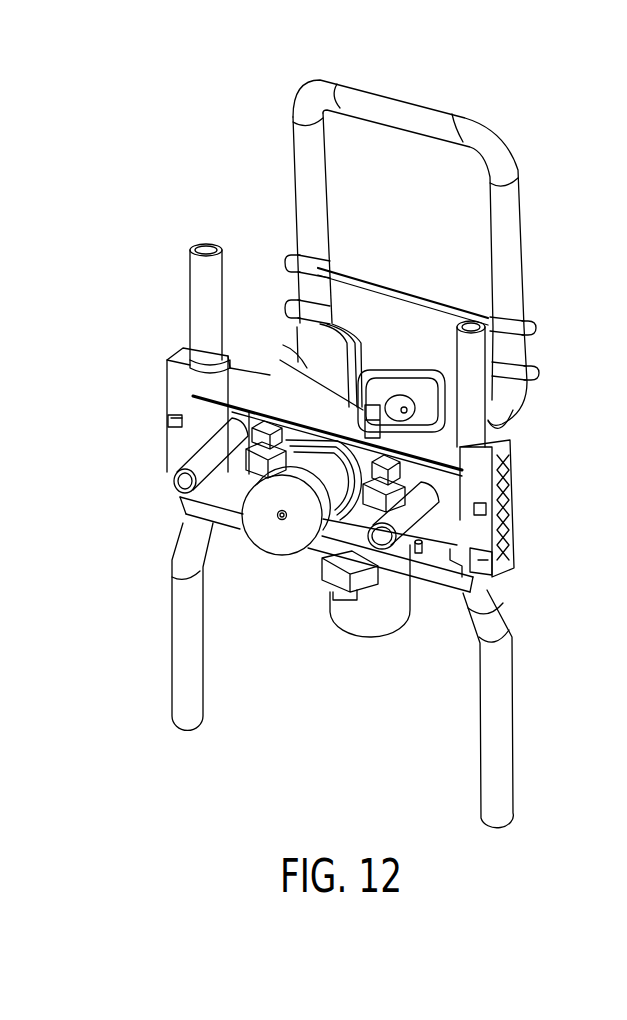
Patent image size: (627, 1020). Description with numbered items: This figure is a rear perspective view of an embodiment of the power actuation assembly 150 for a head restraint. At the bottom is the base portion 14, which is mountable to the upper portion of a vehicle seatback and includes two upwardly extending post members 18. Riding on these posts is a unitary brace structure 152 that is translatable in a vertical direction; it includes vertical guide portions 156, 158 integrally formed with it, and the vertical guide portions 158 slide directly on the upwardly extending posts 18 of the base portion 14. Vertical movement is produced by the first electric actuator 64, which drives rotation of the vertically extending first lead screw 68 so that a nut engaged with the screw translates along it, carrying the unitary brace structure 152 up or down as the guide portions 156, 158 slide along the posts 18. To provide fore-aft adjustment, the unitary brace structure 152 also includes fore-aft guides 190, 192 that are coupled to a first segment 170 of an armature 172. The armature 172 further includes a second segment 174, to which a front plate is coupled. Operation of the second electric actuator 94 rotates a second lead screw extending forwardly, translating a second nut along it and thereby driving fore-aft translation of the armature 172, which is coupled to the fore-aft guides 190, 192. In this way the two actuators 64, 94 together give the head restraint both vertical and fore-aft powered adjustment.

The base portion 14 is at (135, 645).
The post members 18 is at (182, 705).
The first electric actuator 64 is at (363, 630).
The first lead screw 68 is at (330, 378).
The second electric actuator 94 is at (285, 543).
The power actuation assembly 150 is at (538, 493).
The unitary brace structure 152 is at (483, 551).
The vertical guide portion 156 is at (481, 470).
The vertical guide portion 158 is at (165, 388).
The first segment 170 is at (250, 219).
The armature 172 is at (531, 118).
The second segment 174 is at (301, 159).
The fore-aft guide 190 is at (400, 534).
The fore-aft guide 192 is at (190, 462).